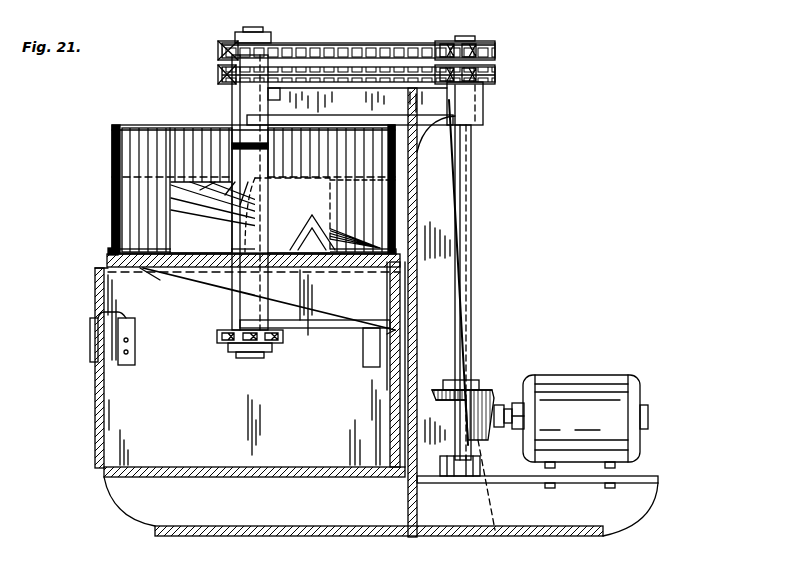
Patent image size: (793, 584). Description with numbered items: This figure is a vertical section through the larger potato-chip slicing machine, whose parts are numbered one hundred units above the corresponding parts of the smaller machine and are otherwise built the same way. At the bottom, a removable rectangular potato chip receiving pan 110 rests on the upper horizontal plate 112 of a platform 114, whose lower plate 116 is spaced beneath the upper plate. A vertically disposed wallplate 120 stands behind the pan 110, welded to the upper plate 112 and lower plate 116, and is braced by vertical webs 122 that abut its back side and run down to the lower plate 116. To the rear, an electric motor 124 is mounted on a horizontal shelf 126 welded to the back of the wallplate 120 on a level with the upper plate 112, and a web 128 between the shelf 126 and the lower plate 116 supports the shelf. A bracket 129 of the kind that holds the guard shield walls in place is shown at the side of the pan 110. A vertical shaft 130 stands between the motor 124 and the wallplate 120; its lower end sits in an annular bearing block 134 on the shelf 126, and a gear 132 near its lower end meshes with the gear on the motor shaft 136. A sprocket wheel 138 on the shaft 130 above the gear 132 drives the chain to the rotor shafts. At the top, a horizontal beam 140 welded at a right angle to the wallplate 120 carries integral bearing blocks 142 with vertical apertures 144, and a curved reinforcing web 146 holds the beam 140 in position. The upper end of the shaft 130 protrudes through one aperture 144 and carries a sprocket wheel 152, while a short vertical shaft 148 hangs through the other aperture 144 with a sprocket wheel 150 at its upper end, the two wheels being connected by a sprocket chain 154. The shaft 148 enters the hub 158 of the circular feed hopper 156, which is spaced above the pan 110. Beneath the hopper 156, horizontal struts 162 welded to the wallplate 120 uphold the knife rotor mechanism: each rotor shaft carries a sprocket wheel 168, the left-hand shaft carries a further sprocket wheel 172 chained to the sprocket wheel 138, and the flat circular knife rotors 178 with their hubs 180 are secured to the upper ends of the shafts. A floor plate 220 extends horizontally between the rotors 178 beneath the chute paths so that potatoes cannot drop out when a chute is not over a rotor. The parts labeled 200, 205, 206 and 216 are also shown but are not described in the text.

The potato chip receiving pan 110 is at (95, 421).
The upper horizontal plate 112 is at (236, 477).
The platform 114 is at (118, 514).
The lower plate 116 is at (292, 537).
The wallplate 120 is at (412, 313).
The vertical webs 122 is at (450, 188).
The electric motor 124 is at (556, 390).
The horizontal shelf 126 is at (658, 479).
The web 128 is at (600, 505).
The bracket 129 is at (90, 322).
The vertical shaft 130 is at (466, 251).
The gear 132 is at (478, 389).
The annular bearing block 134 is at (440, 465).
The motor shaft 136 is at (516, 429).
The sprocket wheel 138 is at (496, 77).
The horizontal beam 140 is at (331, 88).
The bearing blocks 142 is at (232, 118).
The apertures 144 is at (250, 100).
The curved reinforcing web 146 is at (458, 155).
The short vertical shaft 148 is at (252, 30).
The sprocket wheel 150 is at (220, 50).
The sprocket wheel 152 is at (495, 57).
The sprocket chain 154 is at (400, 47).
The feed hopper 156 is at (112, 192).
The hub 158 is at (236, 164).
The struts 162 is at (330, 328).
The sprocket wheel 168 is at (217, 335).
The sprocket wheel 172 is at (219, 74).
The knife rotors 178 is at (107, 261).
The hub 180 is at (228, 278).
The conveyor 200 is at (232, 252).
The guide 205 is at (150, 270).
The deflector 206 is at (342, 215).
The opening 216 is at (276, 186).
The floor plate 220 is at (108, 251).